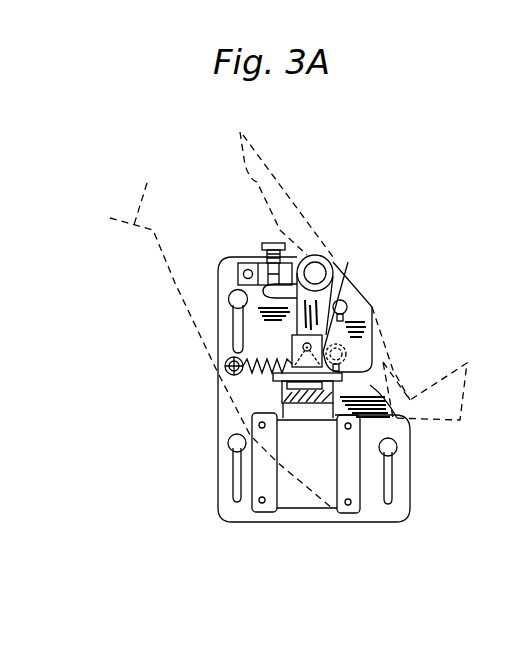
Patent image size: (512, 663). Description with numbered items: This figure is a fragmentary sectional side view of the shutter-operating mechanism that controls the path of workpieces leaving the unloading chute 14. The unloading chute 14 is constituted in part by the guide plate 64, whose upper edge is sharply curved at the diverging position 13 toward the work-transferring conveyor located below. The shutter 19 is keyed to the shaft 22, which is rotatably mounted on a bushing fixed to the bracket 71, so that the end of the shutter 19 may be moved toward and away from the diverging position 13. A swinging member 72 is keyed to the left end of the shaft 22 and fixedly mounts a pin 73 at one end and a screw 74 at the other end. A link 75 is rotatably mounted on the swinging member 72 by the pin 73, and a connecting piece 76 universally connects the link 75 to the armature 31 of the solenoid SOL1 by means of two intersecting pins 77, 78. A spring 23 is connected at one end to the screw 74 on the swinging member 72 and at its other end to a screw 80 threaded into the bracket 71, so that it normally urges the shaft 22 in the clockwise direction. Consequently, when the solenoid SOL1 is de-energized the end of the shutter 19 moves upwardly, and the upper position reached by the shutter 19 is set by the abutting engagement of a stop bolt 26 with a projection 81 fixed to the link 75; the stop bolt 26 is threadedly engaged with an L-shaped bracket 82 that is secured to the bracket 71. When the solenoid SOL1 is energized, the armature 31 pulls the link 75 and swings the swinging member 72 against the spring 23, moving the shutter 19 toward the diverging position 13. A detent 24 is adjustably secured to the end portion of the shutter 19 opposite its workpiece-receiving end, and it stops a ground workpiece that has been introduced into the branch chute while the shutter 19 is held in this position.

The diverging position 13 is at (162, 231).
The unloading chute 14 is at (400, 530).
The shutter 19 is at (257, 182).
The shaft 22 is at (346, 304).
The spring 23 is at (266, 362).
The detent 24 is at (463, 406).
The stop bolt 26 is at (281, 243).
The armature 31 is at (290, 413).
The guide plate 64 is at (221, 335).
The bracket 71 is at (392, 515).
The swinging member 72 is at (355, 317).
The pin 73 is at (322, 261).
The screw 74 is at (350, 356).
The link 75 is at (331, 300).
The connecting piece 76 is at (291, 326).
The pin 77 is at (295, 395).
The pin 78 is at (398, 418).
The screw 80 is at (225, 364).
The projection 81 is at (240, 286).
The L-shaped bracket 82 is at (264, 273).
The solenoid SOL1 is at (313, 508).